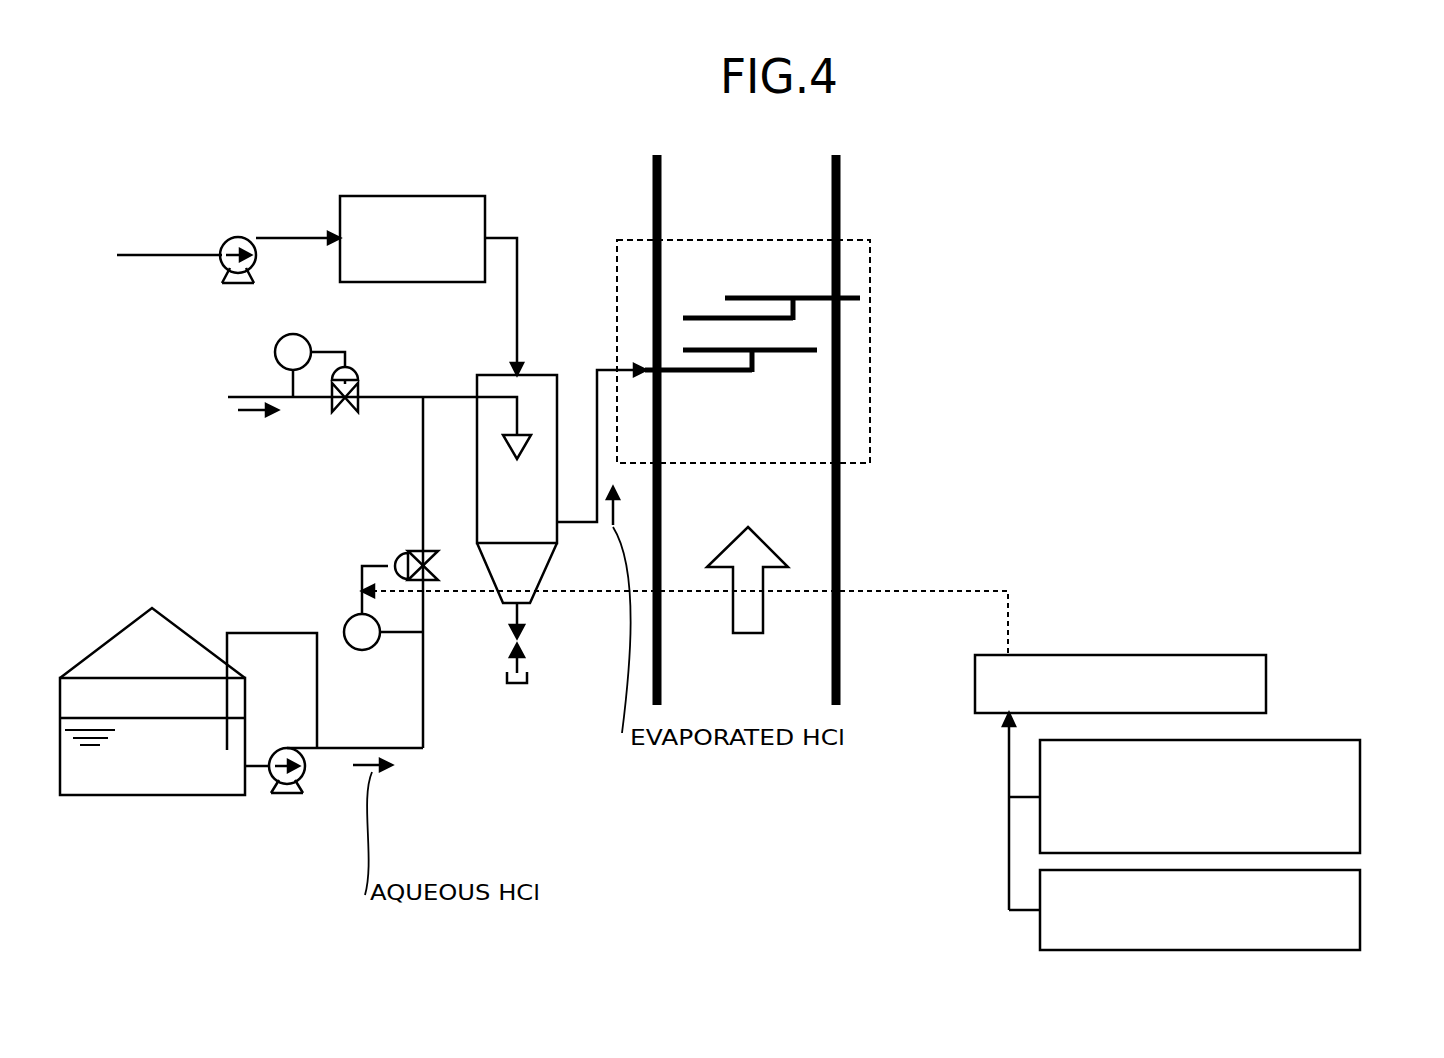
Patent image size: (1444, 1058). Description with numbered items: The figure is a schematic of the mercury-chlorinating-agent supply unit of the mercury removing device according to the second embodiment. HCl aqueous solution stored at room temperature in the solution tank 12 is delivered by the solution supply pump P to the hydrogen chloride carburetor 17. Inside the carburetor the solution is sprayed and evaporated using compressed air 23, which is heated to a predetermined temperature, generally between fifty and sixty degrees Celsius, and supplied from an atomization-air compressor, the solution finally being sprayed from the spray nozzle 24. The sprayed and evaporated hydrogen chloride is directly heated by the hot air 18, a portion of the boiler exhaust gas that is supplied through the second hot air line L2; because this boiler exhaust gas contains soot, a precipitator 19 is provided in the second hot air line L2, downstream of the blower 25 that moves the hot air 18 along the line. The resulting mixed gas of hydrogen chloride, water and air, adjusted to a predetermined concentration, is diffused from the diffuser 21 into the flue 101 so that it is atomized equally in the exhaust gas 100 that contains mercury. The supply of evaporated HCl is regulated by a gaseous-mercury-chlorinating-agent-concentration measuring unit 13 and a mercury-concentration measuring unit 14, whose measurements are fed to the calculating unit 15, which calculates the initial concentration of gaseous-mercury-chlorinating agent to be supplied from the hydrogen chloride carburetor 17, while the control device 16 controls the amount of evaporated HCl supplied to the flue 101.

The solution tank 12 is at (140, 797).
The gaseous-mercury-chlorinating-agent-concentration measuring unit 13 is at (1360, 773).
The mercury-concentration measuring unit 14 is at (1360, 895).
The calculating unit 15 is at (1172, 684).
The control device 16 is at (1266, 676).
The hydrogen chloride carburetor 17 is at (543, 582).
The hot air 18 is at (133, 253).
The precipitator 19 is at (441, 196).
The diffuser 21 is at (748, 296).
The compressed air 23 is at (255, 415).
The spray nozzle 24 is at (504, 445).
The blower 25 is at (230, 238).
The exhaust gas 100 is at (772, 543).
The flue 101 is at (840, 205).
The solution supply pump P is at (285, 797).
The second hot air line L2 is at (505, 237).